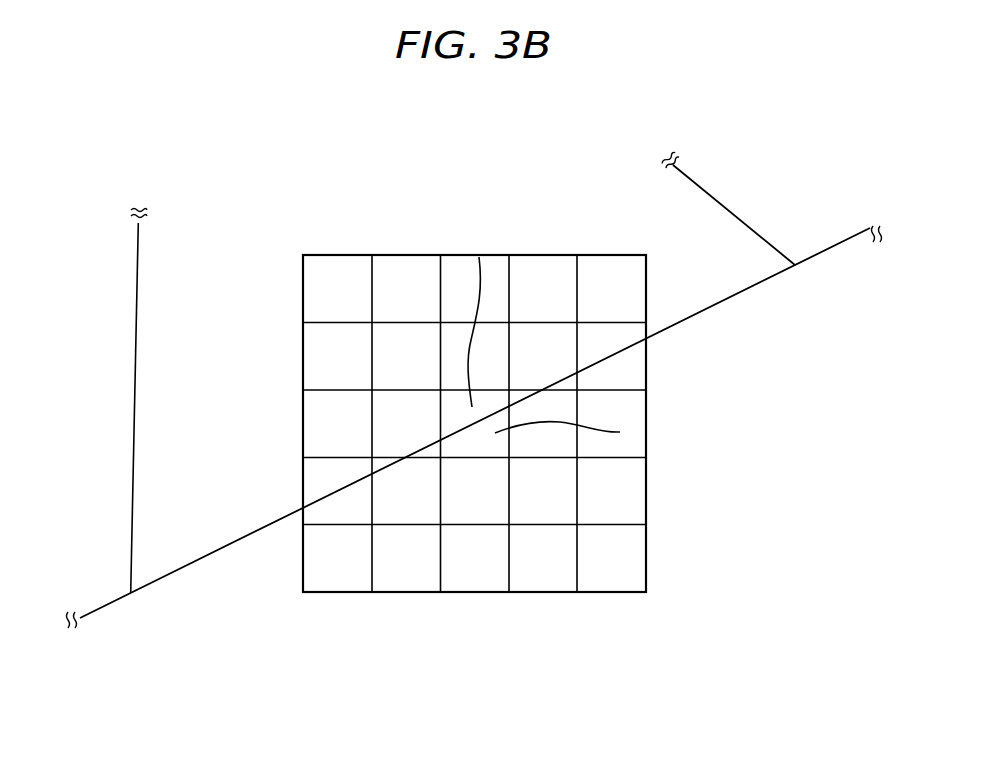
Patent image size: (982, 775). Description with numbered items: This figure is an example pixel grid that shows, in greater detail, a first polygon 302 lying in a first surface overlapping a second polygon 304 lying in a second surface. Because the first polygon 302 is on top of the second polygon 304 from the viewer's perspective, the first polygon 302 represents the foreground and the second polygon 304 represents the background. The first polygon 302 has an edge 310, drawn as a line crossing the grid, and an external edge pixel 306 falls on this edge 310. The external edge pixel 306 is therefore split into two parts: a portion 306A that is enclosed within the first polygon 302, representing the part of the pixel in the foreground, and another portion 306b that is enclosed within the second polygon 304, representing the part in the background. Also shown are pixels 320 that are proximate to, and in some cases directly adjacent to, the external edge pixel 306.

The first polygon 302 is at (763, 541).
The second polygon 304 is at (628, 193).
The external edge pixel 306 is at (477, 460).
The portion of external edge pixel enclosed within first polygon 306A is at (620, 432).
The portion of external edge pixel enclosed within second polygon 306b is at (479, 257).
The edge 310 is at (175, 572).
The proximate pixels 320 is at (395, 275).